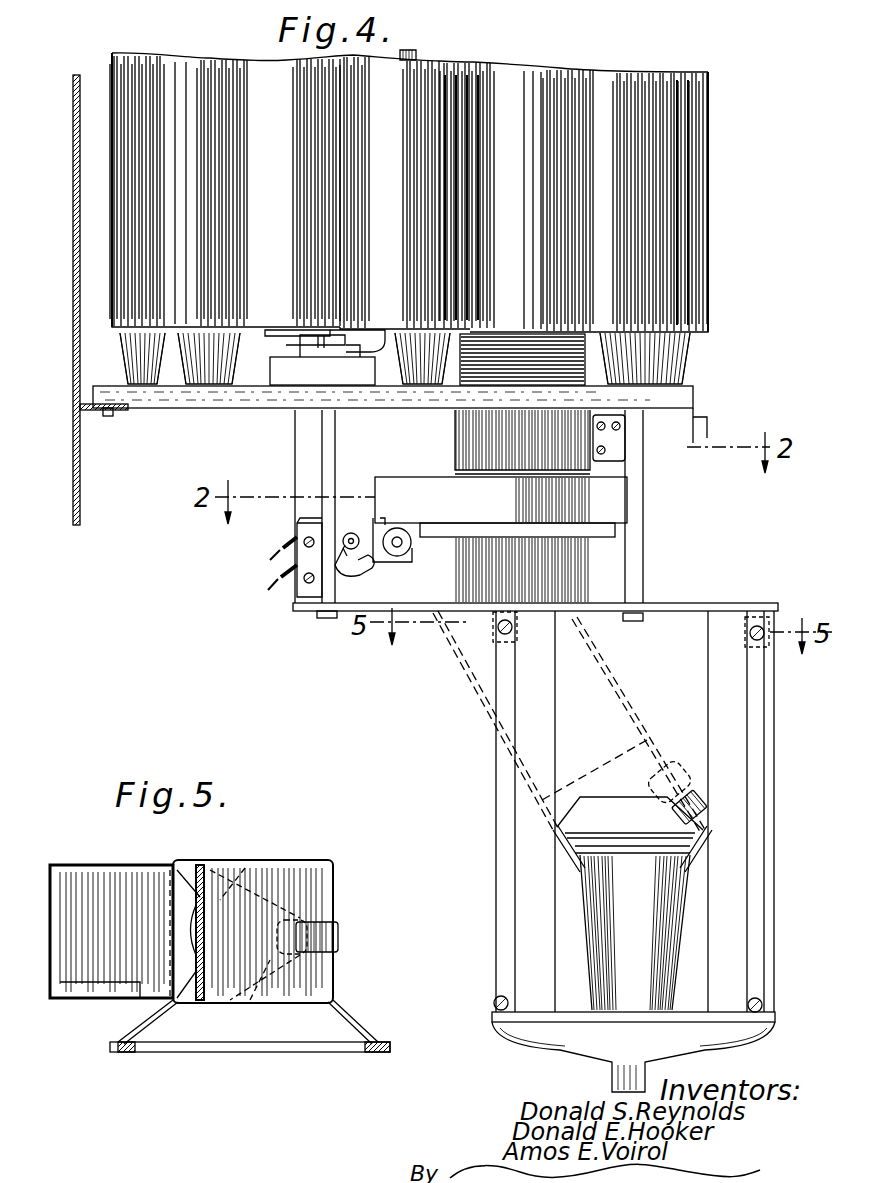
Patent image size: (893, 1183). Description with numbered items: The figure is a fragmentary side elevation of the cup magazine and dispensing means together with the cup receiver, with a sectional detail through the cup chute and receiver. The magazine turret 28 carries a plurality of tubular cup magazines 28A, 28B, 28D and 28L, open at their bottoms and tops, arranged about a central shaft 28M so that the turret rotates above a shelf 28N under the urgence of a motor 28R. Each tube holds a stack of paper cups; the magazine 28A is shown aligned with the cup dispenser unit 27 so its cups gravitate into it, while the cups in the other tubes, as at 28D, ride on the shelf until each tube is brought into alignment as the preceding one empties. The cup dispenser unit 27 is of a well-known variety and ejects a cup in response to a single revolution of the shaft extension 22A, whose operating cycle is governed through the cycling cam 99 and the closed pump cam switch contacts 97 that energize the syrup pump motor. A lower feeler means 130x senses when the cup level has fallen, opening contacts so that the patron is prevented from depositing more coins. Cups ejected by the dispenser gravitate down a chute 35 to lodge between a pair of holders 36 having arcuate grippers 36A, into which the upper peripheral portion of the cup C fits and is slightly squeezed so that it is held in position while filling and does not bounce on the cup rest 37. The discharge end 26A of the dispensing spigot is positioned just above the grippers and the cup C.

In FIG. 4, the magazine turret 28 is at (722, 166).
In FIG. 4, the tubular cup magazine 28A is at (541, 229).
In FIG. 4, the tubular cup magazine 28B is at (414, 253).
In FIG. 4, the tubular cup magazine 28D is at (208, 203).
In FIG. 4, the tubular cup magazine 28L is at (638, 259).
In FIG. 4, the central shaft 28M is at (424, 56).
In FIG. 4, the shelf 28N is at (698, 396).
In FIG. 4, the motor 28R is at (346, 384).
In FIG. 4, the lower feeler means 130x is at (606, 432).
In FIG. 4, the cup dispenser unit 27 is at (501, 507).
In FIG. 4, the shaft extension 22A is at (397, 557).
In FIG. 4, the cycling cam 99 is at (368, 562).
In FIG. 4, the pump cam switch contacts 97 is at (303, 592).
In FIG. 4, the chute 35 is at (640, 707).
In FIG. 5, the chute 35 is at (88, 892).
In FIG. 4, the holders 36 is at (556, 868).
In FIG. 5, the arcuate grippers 36A is at (245, 872).
In FIG. 4, the discharge end of dispensing spigot 26A is at (676, 808).
In FIG. 5, the discharge end of dispensing spigot 26A is at (300, 958).
In FIG. 4, the cup rest 37 is at (542, 930).
In FIG. 5, the cup rest 37 is at (302, 1042).
In FIG. 4, the cup C is at (622, 916).